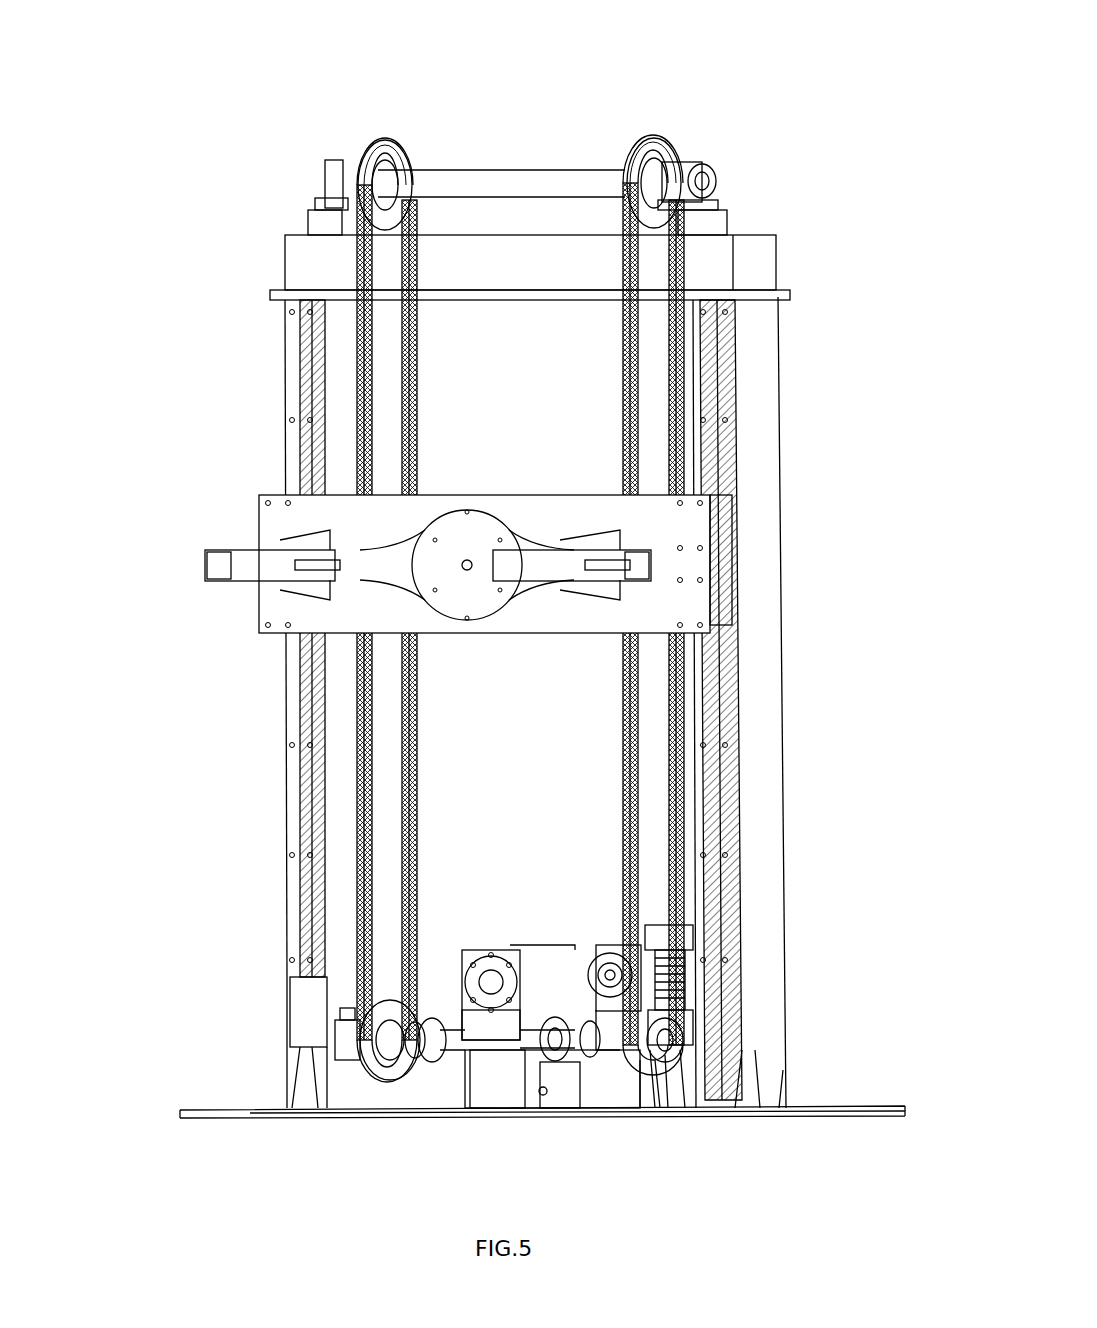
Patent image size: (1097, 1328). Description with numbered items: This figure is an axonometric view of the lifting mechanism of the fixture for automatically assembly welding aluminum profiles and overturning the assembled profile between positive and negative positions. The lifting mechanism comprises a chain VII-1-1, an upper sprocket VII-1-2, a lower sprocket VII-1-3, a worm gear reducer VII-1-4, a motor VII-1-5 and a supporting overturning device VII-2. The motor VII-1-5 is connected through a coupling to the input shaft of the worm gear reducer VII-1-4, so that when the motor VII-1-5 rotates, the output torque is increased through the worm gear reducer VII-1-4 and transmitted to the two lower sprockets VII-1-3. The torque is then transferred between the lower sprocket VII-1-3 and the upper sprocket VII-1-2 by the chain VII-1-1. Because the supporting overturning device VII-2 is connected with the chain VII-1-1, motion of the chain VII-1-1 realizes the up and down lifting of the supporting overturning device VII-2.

The chain VII-1-1 is at (385, 142).
The upper sprocket VII-1-2 is at (665, 152).
The supporting overturning device VII-2 is at (345, 510).
The lower sprocket VII-1-3 is at (372, 1066).
The worm gear reducer VII-1-4 is at (523, 1083).
The motor VII-1-5 is at (690, 945).